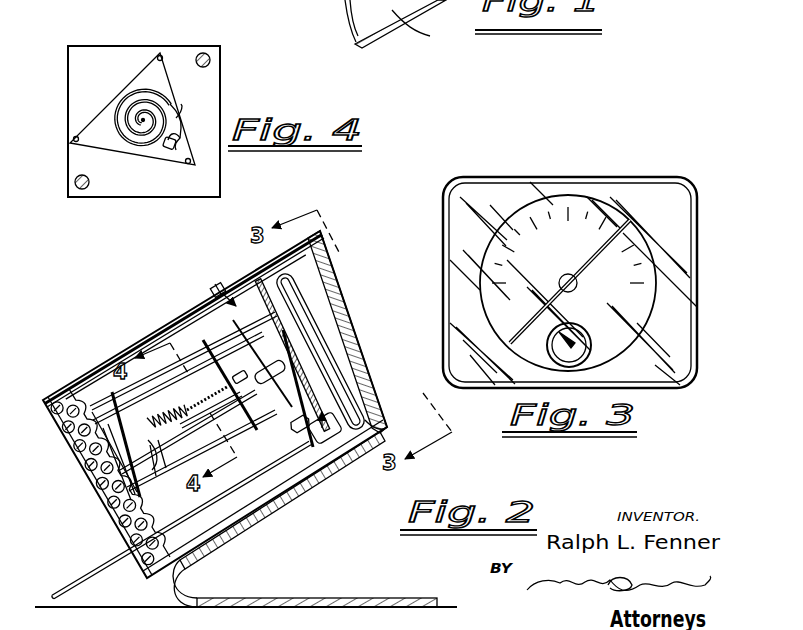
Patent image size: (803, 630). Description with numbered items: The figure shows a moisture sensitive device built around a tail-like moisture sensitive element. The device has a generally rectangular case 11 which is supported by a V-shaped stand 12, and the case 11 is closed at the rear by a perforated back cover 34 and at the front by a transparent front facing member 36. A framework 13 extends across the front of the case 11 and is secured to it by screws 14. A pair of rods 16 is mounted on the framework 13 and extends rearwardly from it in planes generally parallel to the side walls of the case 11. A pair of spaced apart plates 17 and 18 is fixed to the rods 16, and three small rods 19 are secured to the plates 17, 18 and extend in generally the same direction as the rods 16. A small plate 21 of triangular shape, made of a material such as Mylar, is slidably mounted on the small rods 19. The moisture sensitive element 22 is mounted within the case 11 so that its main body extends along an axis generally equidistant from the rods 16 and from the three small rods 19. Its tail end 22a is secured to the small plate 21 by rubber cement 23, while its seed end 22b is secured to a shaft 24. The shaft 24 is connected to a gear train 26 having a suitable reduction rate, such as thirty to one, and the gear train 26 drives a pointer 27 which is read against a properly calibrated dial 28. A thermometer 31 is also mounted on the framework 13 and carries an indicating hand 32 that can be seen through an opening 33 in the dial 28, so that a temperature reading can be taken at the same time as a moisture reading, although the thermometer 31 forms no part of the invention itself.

In FIG. 2, the case 11 is at (122, 354).
In FIG. 1, the V-shaped stand 12 is at (428, 35).
In FIG. 2, the V-shaped stand 12 is at (255, 521).
In FIG. 2, the framework 13 is at (268, 305).
In FIG. 2, the screws 14 is at (218, 284).
In FIG. 4, the rods 16 is at (210, 58).
In FIG. 2, the rods 16 is at (224, 340).
In FIG. 4, the plate 17 is at (206, 94).
In FIG. 2, the plate 17 is at (140, 452).
In FIG. 2, the plate 18 is at (239, 374).
In FIG. 4, the small rods 19 is at (157, 57).
In FIG. 2, the small rods 19 is at (192, 438).
In FIG. 4, the small plate 21 is at (119, 100).
In FIG. 2, the small plate 21 is at (180, 404).
In FIG. 2, the moisture sensitive element 22 is at (180, 411).
In FIG. 4, the tail end 22a is at (178, 104).
In FIG. 2, the seed end 22b is at (222, 391).
In FIG. 2, the rubber cement 23 is at (148, 462).
In FIG. 2, the shaft 24 is at (266, 383).
In FIG. 2, the gear train 26 is at (281, 405).
In FIG. 3, the pointer 27 is at (586, 266).
In FIG. 2, the pointer 27 is at (308, 326).
In FIG. 3, the dial 28 is at (553, 206).
In FIG. 2, the dial 28 is at (283, 296).
In FIG. 2, the thermometer 31 is at (252, 490).
In FIG. 3, the indicating hand 32 is at (589, 346).
In FIG. 2, the opening 33 is at (386, 421).
In FIG. 2, the perforated back cover 34 is at (100, 506).
In FIG. 2, the transparent front facing member 36 is at (364, 350).